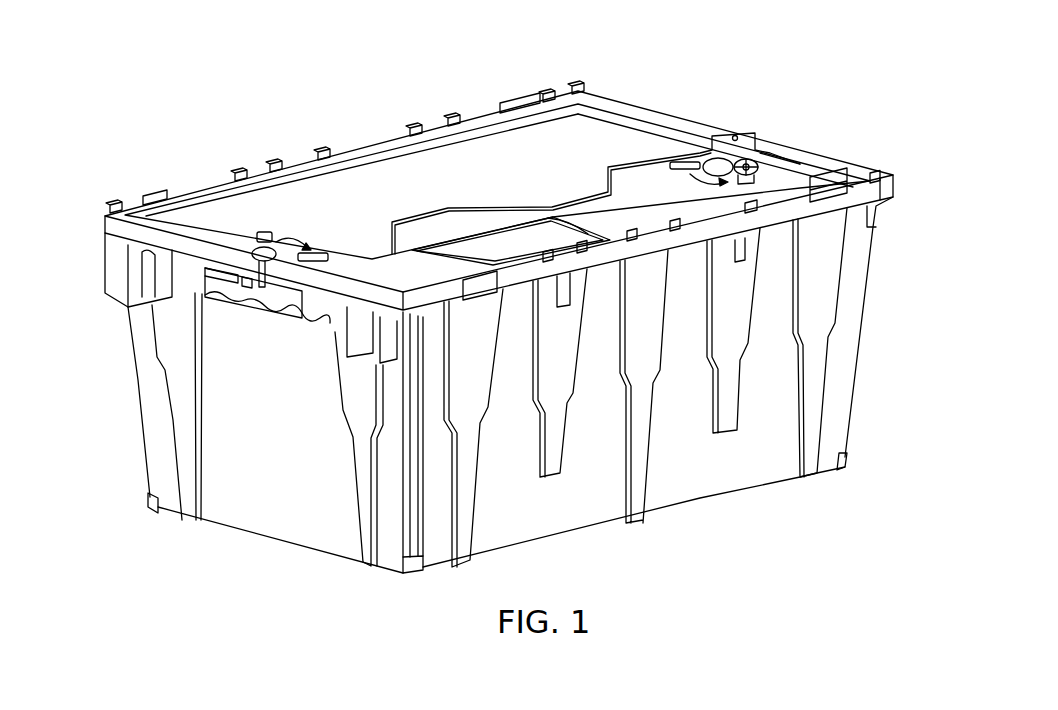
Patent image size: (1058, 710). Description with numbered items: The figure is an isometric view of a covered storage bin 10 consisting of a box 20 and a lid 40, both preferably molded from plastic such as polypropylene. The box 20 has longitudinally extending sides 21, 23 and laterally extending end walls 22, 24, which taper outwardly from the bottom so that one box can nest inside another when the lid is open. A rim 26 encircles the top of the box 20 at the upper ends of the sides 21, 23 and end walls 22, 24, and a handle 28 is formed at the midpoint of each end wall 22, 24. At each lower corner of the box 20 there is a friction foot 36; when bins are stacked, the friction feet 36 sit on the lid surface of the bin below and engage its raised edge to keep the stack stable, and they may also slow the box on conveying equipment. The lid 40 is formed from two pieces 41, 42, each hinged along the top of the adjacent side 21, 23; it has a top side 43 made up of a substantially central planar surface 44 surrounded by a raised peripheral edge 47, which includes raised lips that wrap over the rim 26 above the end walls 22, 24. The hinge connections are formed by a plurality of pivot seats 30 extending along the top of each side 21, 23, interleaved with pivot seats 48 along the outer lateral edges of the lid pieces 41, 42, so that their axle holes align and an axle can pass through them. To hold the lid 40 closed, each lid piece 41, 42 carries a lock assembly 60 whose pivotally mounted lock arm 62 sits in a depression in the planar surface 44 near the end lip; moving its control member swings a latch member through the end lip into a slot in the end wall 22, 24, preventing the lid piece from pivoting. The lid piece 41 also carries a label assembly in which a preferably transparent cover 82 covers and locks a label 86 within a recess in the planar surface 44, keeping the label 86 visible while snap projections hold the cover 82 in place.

The storage bin 10 is at (136, 95).
The box 20 is at (114, 434).
The side 21 is at (700, 477).
The end wall 22 is at (268, 520).
The side 23 is at (137, 350).
The end wall 24 is at (850, 403).
The rim 26 is at (898, 190).
The handle 28 is at (278, 308).
The pivot seat 30 is at (473, 118).
The friction foot 36 is at (150, 500).
The lid 40 is at (608, 92).
The lid piece 41 is at (804, 138).
The lid piece 42 is at (684, 112).
The top side 43 is at (623, 134).
The central planar surface 44 is at (227, 217).
The raised peripheral edge 47 is at (96, 214).
The pivot seat 48 is at (430, 132).
The lock assembly 60 is at (280, 224).
The lock arm 62 is at (750, 157).
The cover 82 is at (512, 237).
The label 86 is at (493, 263).